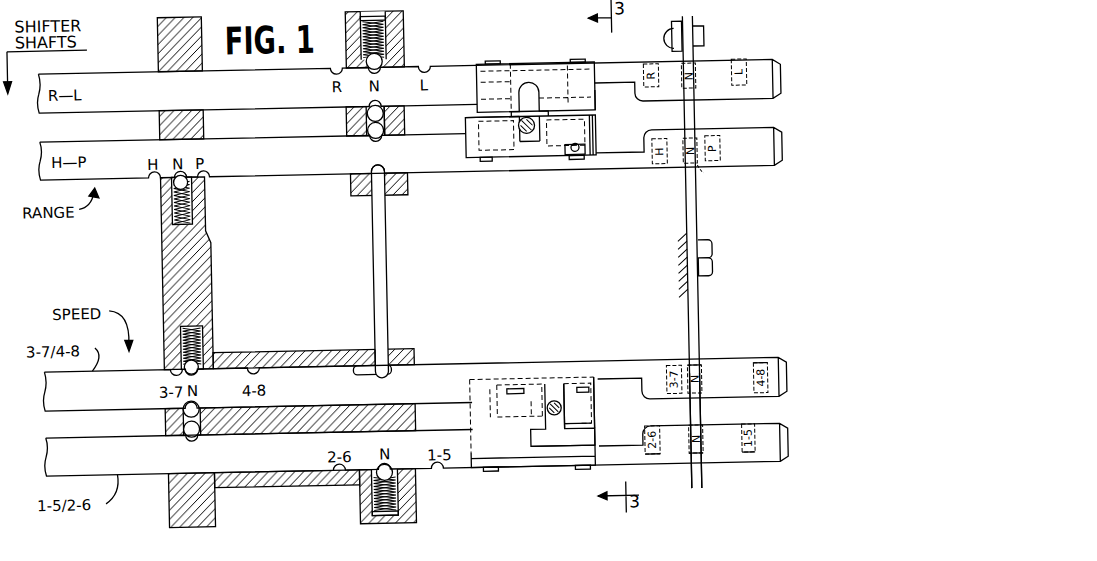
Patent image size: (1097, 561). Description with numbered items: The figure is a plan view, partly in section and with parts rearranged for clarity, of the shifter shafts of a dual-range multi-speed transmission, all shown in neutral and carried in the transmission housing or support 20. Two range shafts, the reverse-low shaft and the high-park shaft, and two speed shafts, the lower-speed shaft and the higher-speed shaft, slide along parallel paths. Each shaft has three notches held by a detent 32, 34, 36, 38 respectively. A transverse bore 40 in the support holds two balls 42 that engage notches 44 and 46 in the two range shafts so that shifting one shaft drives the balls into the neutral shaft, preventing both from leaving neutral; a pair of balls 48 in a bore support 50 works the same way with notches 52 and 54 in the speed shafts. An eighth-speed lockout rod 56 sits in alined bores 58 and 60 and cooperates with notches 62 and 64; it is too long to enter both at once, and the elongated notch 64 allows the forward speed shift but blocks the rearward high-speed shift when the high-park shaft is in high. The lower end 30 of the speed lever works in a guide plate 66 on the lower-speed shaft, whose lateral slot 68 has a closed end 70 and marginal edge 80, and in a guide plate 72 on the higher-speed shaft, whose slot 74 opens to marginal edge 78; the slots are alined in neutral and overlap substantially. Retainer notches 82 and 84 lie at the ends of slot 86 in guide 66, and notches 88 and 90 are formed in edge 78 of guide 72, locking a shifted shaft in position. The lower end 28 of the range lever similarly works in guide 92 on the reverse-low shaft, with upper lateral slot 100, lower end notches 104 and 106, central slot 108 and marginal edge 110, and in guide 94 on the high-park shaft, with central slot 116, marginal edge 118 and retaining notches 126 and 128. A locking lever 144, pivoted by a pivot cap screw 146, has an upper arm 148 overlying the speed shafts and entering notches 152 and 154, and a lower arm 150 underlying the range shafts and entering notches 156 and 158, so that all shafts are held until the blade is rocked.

The transmission housing or support 20 is at (166, 255).
The lower end of range lever 28 is at (529, 150).
The lower end of speed lever 30 is at (555, 404).
The detent 32 is at (409, 62).
The detent 34 is at (200, 186).
The detent 36 is at (208, 360).
The detent 38 is at (362, 482).
The transverse bore 40 is at (372, 121).
The balls 42 is at (375, 134).
The notch 44 is at (375, 111).
The notch 46 is at (390, 137).
The pair of balls 48 is at (200, 428).
The bore support 50 is at (168, 420).
The notch 52 is at (193, 404).
The notch 54 is at (198, 433).
The transverse rod 56 is at (391, 260).
The bore 58 is at (370, 195).
The bore 60 is at (375, 365).
The notch 62 is at (380, 166).
The notch 64 is at (382, 376).
The guide plate 66 is at (525, 474).
The lateral slot 68 is at (549, 472).
The closed end of slot 70 is at (566, 452).
The guide plate 72 is at (596, 390).
The slot 74 is at (568, 398).
The longitudinal marginal edge 78 is at (580, 431).
The longitudinal marginal edge portion 80 is at (487, 409).
The notch 82 is at (491, 390).
The notch 84 is at (580, 393).
The slot 86 is at (532, 404).
The notch 88 is at (520, 422).
The notch 90 is at (597, 428).
The guide 92 is at (603, 76).
The guide 94 is at (472, 155).
The lateral slot 100 is at (539, 93).
The end notch 104 is at (491, 162).
The end notch 106 is at (568, 162).
The central slot 108 is at (518, 66).
The longitudinal marginal edge 110 is at (600, 126).
The central slot 116 is at (545, 153).
The marginal edge 118 is at (472, 122).
The notch 126 is at (603, 106).
The notch 128 is at (485, 91).
The locking lever 144 is at (701, 296).
The pivot cap screw 146 is at (716, 263).
The upper arm 148 is at (702, 416).
The lower arm 150 is at (702, 126).
The notches 152 is at (745, 461).
The notches 154 is at (758, 370).
The set of notches 156 is at (704, 74).
The set of notches 158 is at (709, 181).